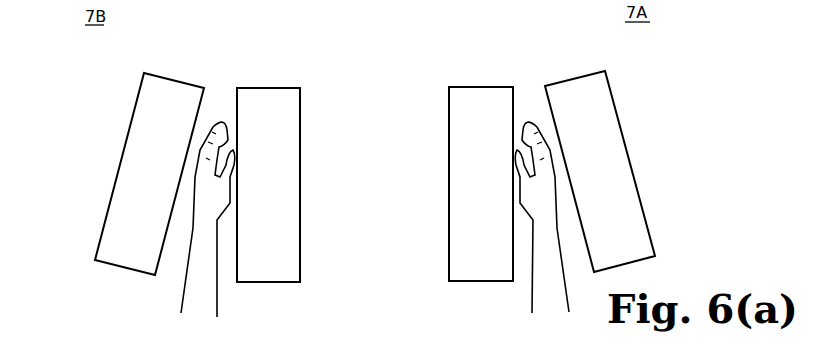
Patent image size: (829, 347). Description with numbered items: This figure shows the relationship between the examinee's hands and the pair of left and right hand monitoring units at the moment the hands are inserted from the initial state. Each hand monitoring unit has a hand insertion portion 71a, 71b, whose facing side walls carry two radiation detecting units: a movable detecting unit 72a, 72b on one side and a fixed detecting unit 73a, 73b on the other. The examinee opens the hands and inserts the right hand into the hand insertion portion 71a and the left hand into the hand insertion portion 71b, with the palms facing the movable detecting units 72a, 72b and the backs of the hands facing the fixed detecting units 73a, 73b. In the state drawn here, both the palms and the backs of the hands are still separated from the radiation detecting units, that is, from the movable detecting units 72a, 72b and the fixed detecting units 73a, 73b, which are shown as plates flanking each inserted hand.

The hand insertion portion 71a is at (526, 88).
The hand insertion portion 71b is at (218, 90).
The movable detecting unit 72a is at (470, 105).
The movable detecting unit 72b is at (278, 107).
The fixed detecting unit 73a is at (598, 94).
The fixed detecting unit 73b is at (150, 99).